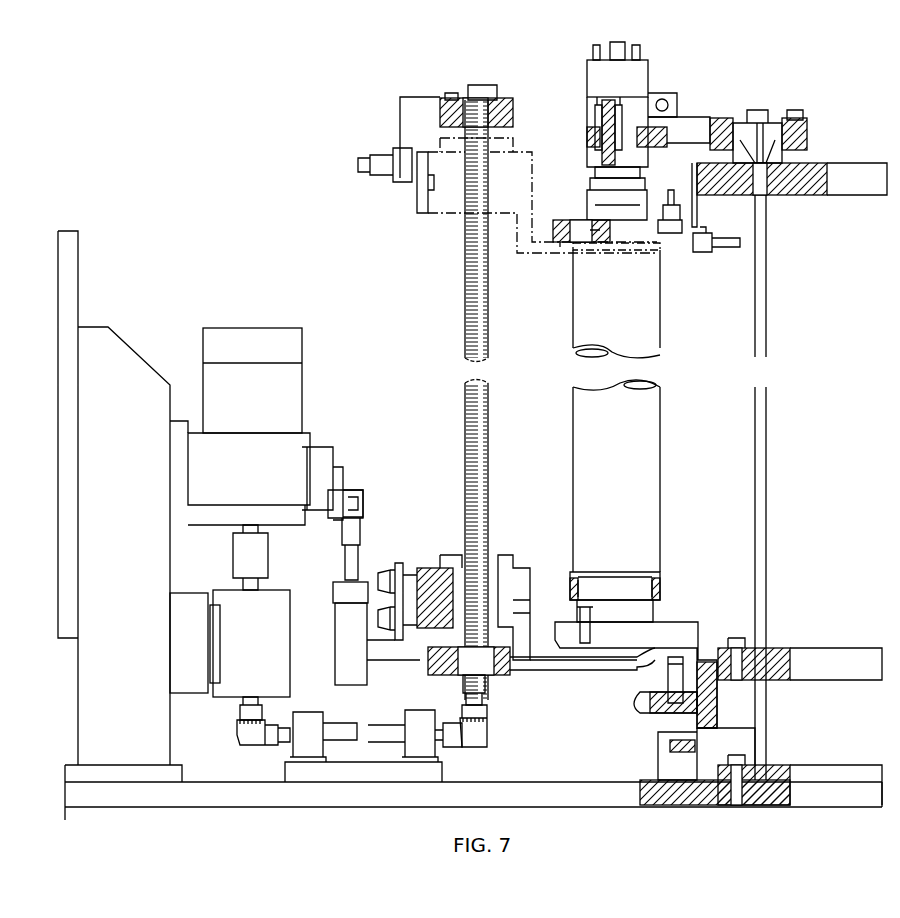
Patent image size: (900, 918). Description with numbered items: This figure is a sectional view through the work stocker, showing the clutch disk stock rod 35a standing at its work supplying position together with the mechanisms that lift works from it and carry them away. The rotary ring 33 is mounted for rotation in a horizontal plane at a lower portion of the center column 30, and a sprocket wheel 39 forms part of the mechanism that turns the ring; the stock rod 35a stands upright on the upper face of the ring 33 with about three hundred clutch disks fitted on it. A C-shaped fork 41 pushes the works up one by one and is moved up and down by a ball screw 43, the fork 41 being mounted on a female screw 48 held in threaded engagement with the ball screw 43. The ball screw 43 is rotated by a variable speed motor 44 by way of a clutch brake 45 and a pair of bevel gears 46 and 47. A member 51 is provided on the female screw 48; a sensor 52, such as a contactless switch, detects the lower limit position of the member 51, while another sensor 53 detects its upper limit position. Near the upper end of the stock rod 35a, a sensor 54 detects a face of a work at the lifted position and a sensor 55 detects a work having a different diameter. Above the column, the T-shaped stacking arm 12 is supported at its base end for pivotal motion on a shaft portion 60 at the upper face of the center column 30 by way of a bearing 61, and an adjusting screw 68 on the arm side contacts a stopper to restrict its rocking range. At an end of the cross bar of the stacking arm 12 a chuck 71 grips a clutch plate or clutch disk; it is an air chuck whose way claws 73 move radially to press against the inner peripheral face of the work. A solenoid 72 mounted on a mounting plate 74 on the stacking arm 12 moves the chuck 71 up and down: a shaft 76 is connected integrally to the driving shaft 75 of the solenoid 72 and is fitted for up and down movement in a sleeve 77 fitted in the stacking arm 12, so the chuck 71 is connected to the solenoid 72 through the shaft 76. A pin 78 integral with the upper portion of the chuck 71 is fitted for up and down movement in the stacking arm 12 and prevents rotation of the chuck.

The stacking arm 12 is at (695, 130).
The center column 30 is at (755, 416).
The rotary ring 33 is at (700, 660).
The clutch disk stock rod 35a is at (662, 450).
The sprocket wheel 39 is at (638, 708).
The C-shaped fork 41 is at (565, 668).
The ball screw 43 is at (463, 345).
The variable speed motor 44 is at (258, 375).
The clutch brake 45 is at (280, 595).
The bevel gear 46 is at (255, 735).
The bevel gear 47 is at (470, 735).
The female screw 48 is at (503, 555).
The member 51 is at (430, 568).
The sensor 52 is at (405, 560).
The sensor 53 is at (405, 182).
The sensor 54 is at (676, 235).
The sensor 55 is at (700, 255).
The shaft portion 60 is at (790, 165).
The bearing 61 is at (810, 125).
The adjusting screw 68 is at (678, 105).
The chuck 71 is at (605, 197).
The solenoid 72 is at (645, 65).
The way claw 73 is at (575, 242).
The mounting plate 74 is at (587, 62).
The driving shaft 75 is at (625, 92).
The shaft 76 is at (600, 112).
The sleeve 77 is at (588, 133).
The pin 78 is at (640, 175).